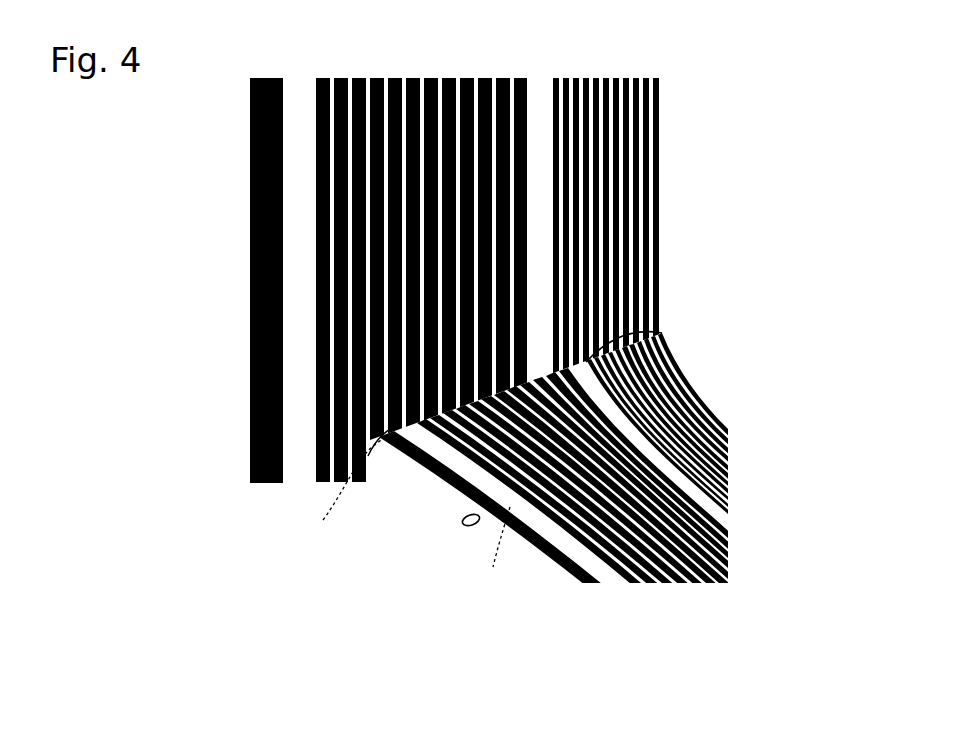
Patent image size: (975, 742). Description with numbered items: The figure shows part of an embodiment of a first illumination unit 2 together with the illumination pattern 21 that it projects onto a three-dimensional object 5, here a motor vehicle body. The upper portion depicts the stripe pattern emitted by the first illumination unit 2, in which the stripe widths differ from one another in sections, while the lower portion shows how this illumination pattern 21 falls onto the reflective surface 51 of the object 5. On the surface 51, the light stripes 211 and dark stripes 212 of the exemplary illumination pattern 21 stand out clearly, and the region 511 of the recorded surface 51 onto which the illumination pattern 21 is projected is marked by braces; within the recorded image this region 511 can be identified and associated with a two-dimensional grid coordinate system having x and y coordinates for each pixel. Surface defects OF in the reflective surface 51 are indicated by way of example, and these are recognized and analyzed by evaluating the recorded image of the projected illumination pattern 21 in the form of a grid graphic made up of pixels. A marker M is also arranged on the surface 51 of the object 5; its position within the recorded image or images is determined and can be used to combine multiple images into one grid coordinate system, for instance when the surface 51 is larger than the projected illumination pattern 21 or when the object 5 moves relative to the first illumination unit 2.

The first illumination unit 2 is at (615, 57).
The three-dimensional object 5 is at (600, 491).
The reflective surface 51 is at (662, 340).
The region 511 is at (600, 491).
The illumination pattern 21 is at (595, 461).
The light stripes 211 is at (501, 538).
The dark stripes 212 is at (486, 514).
The surface defects OF is at (558, 461).
The marker M is at (463, 521).